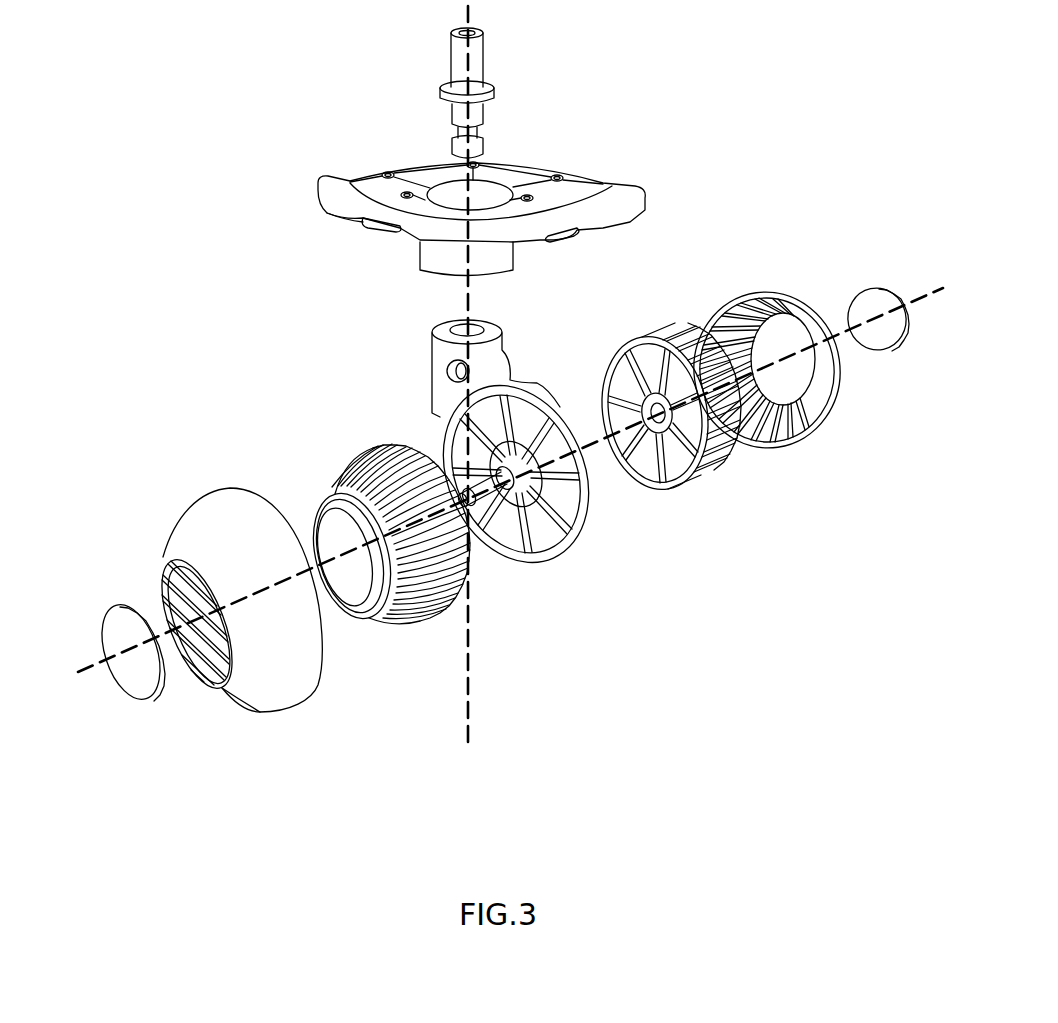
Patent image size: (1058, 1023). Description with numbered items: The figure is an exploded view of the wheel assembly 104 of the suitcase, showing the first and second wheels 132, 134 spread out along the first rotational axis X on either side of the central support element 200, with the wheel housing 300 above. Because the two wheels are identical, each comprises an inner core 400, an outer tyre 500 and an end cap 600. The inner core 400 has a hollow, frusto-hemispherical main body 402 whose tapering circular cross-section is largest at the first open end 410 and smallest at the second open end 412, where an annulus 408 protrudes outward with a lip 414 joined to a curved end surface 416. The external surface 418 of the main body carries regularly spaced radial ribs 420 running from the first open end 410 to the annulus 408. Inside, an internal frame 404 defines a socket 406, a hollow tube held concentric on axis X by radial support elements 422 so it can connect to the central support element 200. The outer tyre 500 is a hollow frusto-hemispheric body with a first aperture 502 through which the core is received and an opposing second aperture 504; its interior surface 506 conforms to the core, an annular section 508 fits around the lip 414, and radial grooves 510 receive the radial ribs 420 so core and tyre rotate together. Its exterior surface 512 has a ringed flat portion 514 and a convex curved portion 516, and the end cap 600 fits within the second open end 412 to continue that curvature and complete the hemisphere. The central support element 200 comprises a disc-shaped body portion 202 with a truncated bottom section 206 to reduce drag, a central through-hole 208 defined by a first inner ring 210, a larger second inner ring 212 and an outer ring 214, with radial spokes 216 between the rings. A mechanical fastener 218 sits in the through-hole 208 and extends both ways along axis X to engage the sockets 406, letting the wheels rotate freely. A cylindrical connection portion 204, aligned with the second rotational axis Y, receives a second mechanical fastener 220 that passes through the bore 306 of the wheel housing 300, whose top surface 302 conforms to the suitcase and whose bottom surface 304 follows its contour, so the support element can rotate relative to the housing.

The wheel assembly 104 is at (195, 75).
The first wheel 132 is at (188, 357).
The second wheel 134 is at (758, 228).
The central support element 200 is at (547, 537).
The body portion 202 is at (573, 547).
The connection portion 204 is at (498, 357).
The truncated bottom section 206 is at (495, 540).
The through-hole 208 is at (493, 530).
The first inner ring 210 is at (466, 492).
The second inner ring 212 is at (512, 477).
The outer ring 214 is at (582, 520).
The radial spokes 216 is at (562, 493).
The mechanical fastener 218 is at (460, 497).
The second mechanical fastener 220 is at (477, 67).
The wheel housing 300 is at (610, 195).
The top surface 302 is at (388, 176).
The bottom surface 304 is at (333, 220).
The bore 306 is at (500, 253).
The inner core 400 is at (353, 463).
The main body 402 is at (382, 457).
The internal frame 404 is at (688, 475).
The socket 406 is at (648, 407).
The annulus 408 is at (327, 500).
The first open end 410 is at (658, 502).
The second open end 412 is at (338, 615).
The lip 414 is at (392, 593).
The curved end surface 416 is at (318, 510).
The external surface 418 is at (460, 573).
The radial ribs 420 is at (442, 590).
The radial support elements 422 is at (717, 460).
The outer tyre 500 is at (190, 530).
The first aperture 502 is at (700, 303).
The second aperture 504 is at (140, 578).
The interior surface 506 is at (793, 413).
The annular section 508 is at (207, 670).
The radial grooves 510 is at (773, 430).
The exterior surface 512 is at (273, 697).
The flat portion 514 is at (312, 715).
The curved portion 516 is at (247, 725).
The end cap 600 is at (888, 337).